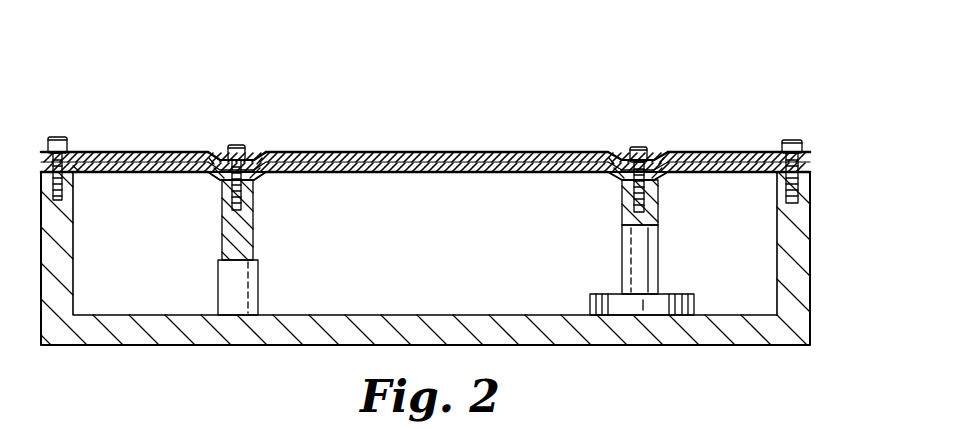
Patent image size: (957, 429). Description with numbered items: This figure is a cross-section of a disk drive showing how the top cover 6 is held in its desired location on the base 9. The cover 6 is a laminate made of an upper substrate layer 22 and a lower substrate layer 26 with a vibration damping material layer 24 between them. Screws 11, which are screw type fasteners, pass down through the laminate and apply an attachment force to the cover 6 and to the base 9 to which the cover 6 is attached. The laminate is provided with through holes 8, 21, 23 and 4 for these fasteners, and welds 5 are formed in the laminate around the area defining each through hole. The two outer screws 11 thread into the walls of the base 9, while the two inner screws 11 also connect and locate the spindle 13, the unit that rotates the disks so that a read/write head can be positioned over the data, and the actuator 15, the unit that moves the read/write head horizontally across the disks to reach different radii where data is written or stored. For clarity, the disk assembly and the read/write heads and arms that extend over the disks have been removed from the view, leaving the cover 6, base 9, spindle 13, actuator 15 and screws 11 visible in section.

The through hole 4 is at (796, 150).
The weld 5 is at (75, 172).
The cover 6 is at (743, 78).
The through hole 8 is at (55, 137).
The base 9 is at (800, 242).
The screw 11 is at (68, 147).
The spindle 13 is at (228, 286).
The actuator 15 is at (630, 265).
The through hole 21 is at (246, 160).
The upper substrate layer 22 is at (427, 152).
The through hole 23 is at (648, 162).
The vibration damping material layer 24 is at (400, 174).
The lower substrate layer 26 is at (478, 174).